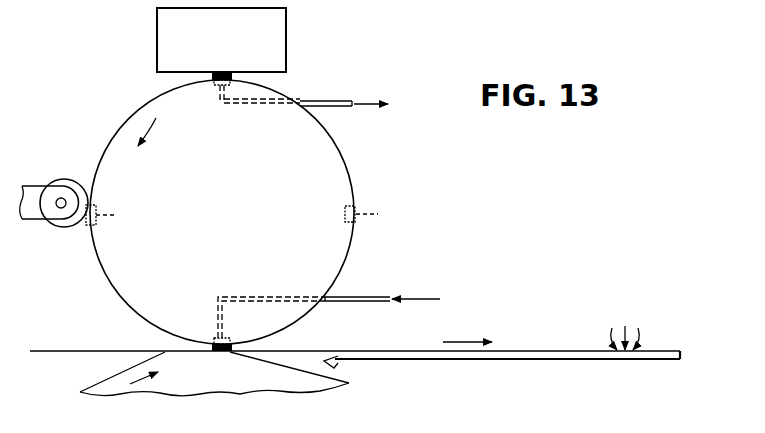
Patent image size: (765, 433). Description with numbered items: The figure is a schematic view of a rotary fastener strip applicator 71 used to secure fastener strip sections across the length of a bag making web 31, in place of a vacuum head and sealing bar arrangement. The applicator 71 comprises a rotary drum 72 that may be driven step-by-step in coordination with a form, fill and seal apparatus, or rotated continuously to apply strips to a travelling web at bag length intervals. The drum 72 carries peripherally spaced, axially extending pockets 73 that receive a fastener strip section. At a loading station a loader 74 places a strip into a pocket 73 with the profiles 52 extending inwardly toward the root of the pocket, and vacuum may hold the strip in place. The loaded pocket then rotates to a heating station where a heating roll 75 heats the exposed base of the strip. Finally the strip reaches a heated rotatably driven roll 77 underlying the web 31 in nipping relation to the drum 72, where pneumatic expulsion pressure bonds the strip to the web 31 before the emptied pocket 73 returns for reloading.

The web 31 is at (70, 352).
The profiles 52 is at (626, 325).
The rotary fastener strip applicator 71 is at (358, 178).
The rotary drum 72 is at (138, 132).
The pockets 73 is at (213, 84).
The loader 74 is at (286, 40).
The heating roll 75 is at (64, 178).
The heated rotatably driven roll 77 is at (288, 378).